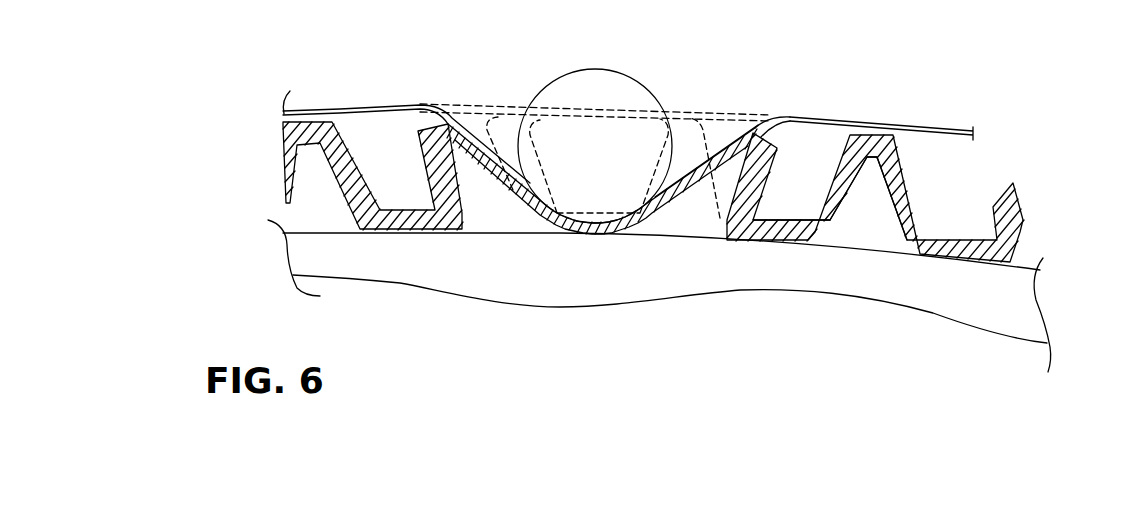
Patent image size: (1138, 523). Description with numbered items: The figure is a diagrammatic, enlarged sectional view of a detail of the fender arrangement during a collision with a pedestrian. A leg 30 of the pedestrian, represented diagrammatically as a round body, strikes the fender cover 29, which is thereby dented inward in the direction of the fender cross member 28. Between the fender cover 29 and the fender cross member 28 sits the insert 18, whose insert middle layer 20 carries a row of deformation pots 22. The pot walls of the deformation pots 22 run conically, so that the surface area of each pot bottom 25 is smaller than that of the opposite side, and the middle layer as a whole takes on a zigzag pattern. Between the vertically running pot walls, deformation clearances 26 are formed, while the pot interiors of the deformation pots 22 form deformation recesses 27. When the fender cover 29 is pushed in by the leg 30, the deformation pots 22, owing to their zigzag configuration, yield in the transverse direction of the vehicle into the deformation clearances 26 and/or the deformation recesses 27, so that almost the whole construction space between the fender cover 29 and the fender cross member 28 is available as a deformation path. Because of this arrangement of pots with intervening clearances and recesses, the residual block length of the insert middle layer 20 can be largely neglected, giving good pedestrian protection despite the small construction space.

The insert 18 is at (816, 162).
The insert middle layer 20 is at (1003, 238).
The deformation pot 22 is at (946, 178).
The pot bottom 25 is at (417, 222).
The deformation clearance 26 is at (880, 236).
The deformation recess 27 is at (773, 205).
The fender cross member 28 is at (613, 285).
The fender cover 29 is at (335, 108).
The leg 30 is at (643, 90).